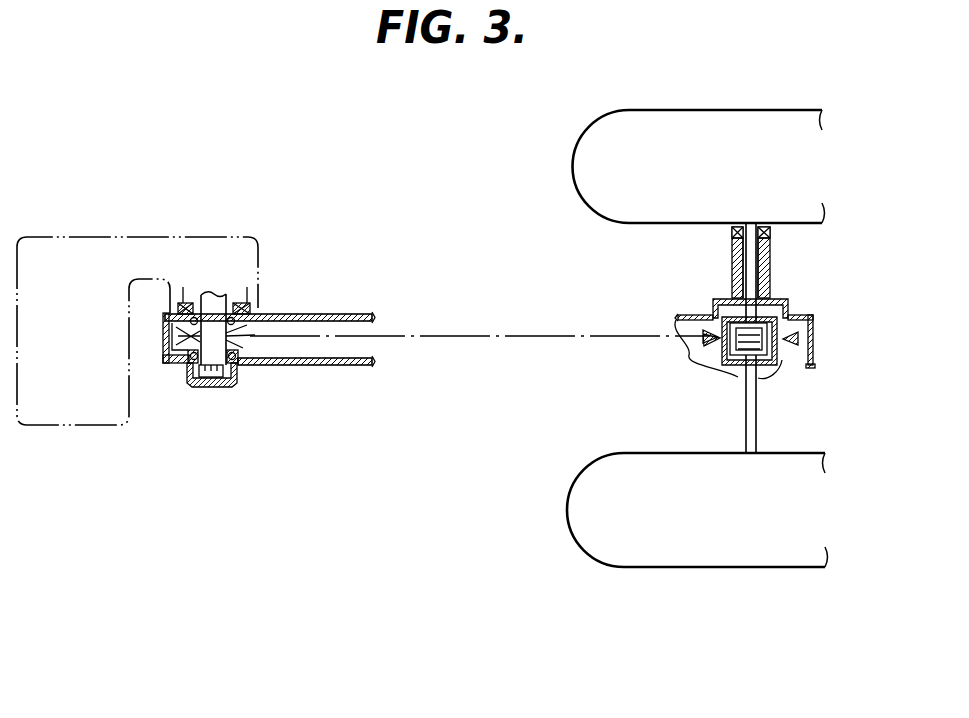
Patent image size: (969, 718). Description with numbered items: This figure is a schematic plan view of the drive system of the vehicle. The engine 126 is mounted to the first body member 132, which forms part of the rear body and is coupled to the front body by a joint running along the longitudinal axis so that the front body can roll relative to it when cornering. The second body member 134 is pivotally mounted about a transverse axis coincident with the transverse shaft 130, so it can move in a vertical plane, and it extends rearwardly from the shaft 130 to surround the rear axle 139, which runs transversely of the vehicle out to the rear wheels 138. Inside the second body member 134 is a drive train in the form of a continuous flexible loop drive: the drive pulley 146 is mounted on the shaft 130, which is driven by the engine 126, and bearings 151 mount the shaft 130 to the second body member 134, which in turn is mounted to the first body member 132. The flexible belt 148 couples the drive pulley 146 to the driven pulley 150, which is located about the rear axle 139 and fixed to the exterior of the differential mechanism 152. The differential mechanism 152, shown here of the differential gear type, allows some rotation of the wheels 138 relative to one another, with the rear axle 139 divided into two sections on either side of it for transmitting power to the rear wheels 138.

The engine 126 is at (258, 236).
The first body member 132 is at (97, 252).
The transverse shaft 130 is at (218, 366).
The second body member 134 is at (338, 366).
The rear wheels 138 is at (702, 125).
The rear axle 139 is at (748, 270).
The drive pulley 146 is at (180, 364).
The flexible belt 148 is at (814, 338).
The driven pulley 150 is at (790, 330).
The bearings 151 is at (237, 366).
The differential mechanism 152 is at (783, 357).